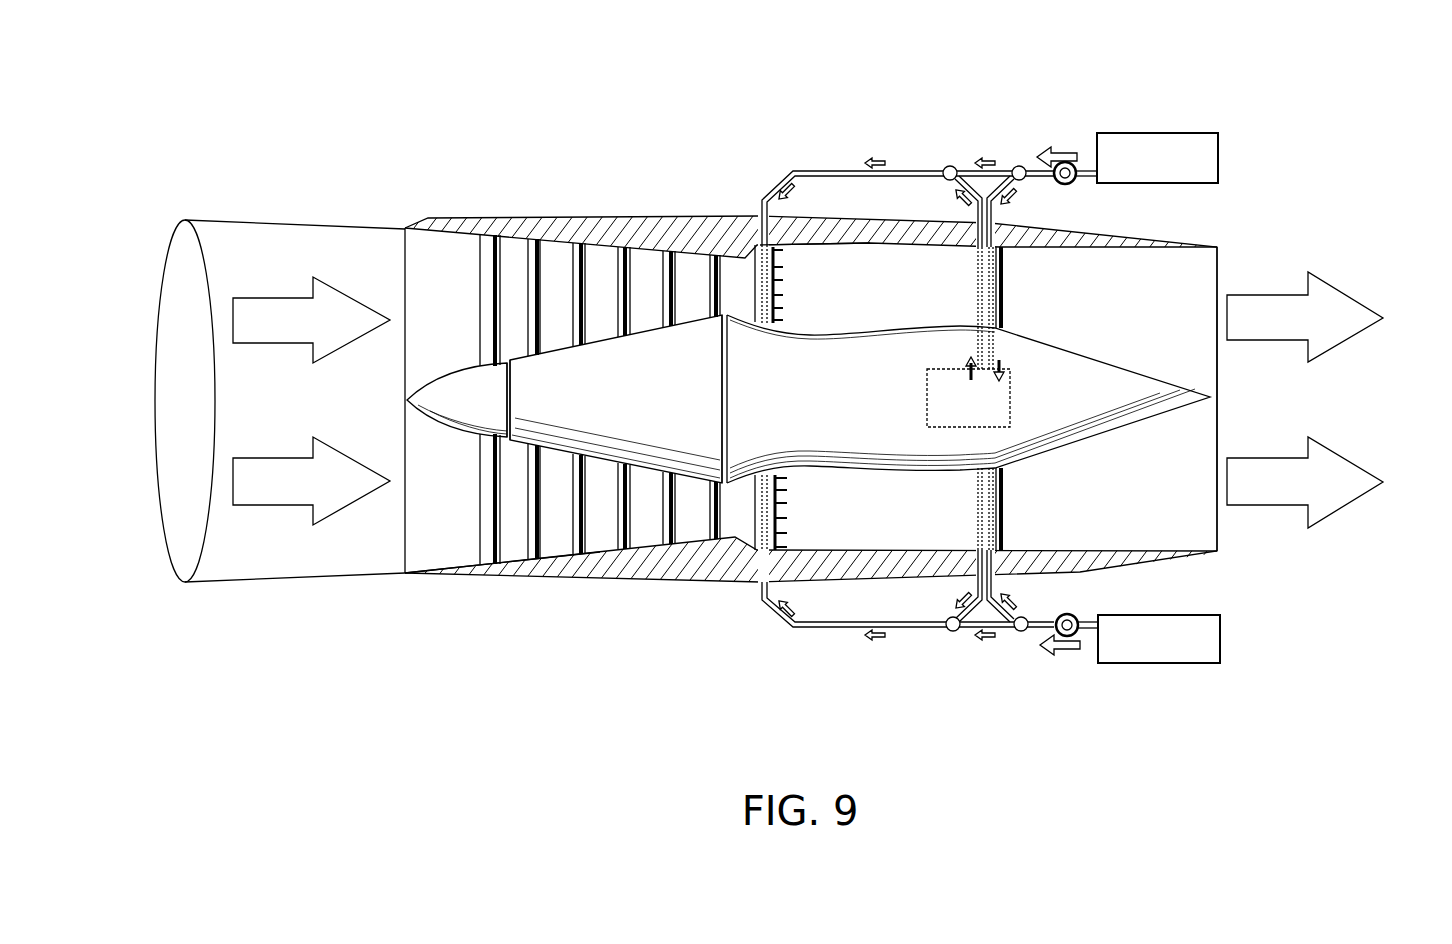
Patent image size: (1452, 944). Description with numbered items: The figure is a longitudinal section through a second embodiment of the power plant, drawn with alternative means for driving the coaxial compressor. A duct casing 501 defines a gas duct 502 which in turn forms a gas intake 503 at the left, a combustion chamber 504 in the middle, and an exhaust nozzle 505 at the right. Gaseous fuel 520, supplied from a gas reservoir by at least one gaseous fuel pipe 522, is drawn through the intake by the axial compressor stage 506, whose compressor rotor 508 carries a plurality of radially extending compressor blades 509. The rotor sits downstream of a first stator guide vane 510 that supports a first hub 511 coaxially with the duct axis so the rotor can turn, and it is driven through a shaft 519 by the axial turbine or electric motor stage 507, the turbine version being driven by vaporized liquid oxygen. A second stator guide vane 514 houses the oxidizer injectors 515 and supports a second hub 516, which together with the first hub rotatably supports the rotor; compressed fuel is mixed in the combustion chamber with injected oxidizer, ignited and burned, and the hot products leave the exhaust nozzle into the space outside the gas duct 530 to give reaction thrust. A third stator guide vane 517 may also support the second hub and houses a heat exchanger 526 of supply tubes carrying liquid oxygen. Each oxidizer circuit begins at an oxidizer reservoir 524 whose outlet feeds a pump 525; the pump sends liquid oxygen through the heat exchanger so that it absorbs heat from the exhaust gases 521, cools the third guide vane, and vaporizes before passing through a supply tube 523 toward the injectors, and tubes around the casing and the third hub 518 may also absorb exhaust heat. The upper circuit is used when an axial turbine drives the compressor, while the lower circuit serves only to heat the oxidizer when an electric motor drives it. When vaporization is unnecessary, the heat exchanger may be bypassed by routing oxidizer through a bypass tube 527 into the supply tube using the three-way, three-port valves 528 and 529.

The duct casing 501 is at (435, 225).
The gas duct 502 is at (295, 401).
The gas intake 503 is at (437, 545).
The combustion chamber 504 is at (808, 255).
The exhaust nozzle 505 is at (1188, 500).
The axial compressor stage 506 is at (600, 272).
The axial turbine or electric motor stage 507 is at (937, 398).
The compressor rotor 508 is at (557, 378).
The compressor blades 509 is at (668, 250).
The first stator guide vane 510 is at (485, 253).
The first hub 511 is at (435, 393).
The second stator guide vane 514 is at (757, 245).
The oxidizer injectors 515 is at (783, 283).
The second hub 516 is at (818, 407).
The third stator guide vane 517 is at (1005, 285).
The third hub 518 is at (977, 505).
The shaft 519 is at (512, 400).
The gaseous fuel 520 is at (250, 313).
The exhaust gases 521 is at (1338, 320).
The gaseous fuel pipe 522 is at (183, 387).
The supply tube 523 is at (850, 170).
The oxidizer reservoir 524 is at (1160, 155).
The pump 525 is at (1067, 162).
The heat exchanger 526 is at (978, 285).
The bypass tube 527 is at (988, 166).
The three-way, three-port valve 528 is at (1021, 166).
The three-way, three-port valve 529 is at (953, 166).
The space outside the gas duct 530 is at (1400, 277).